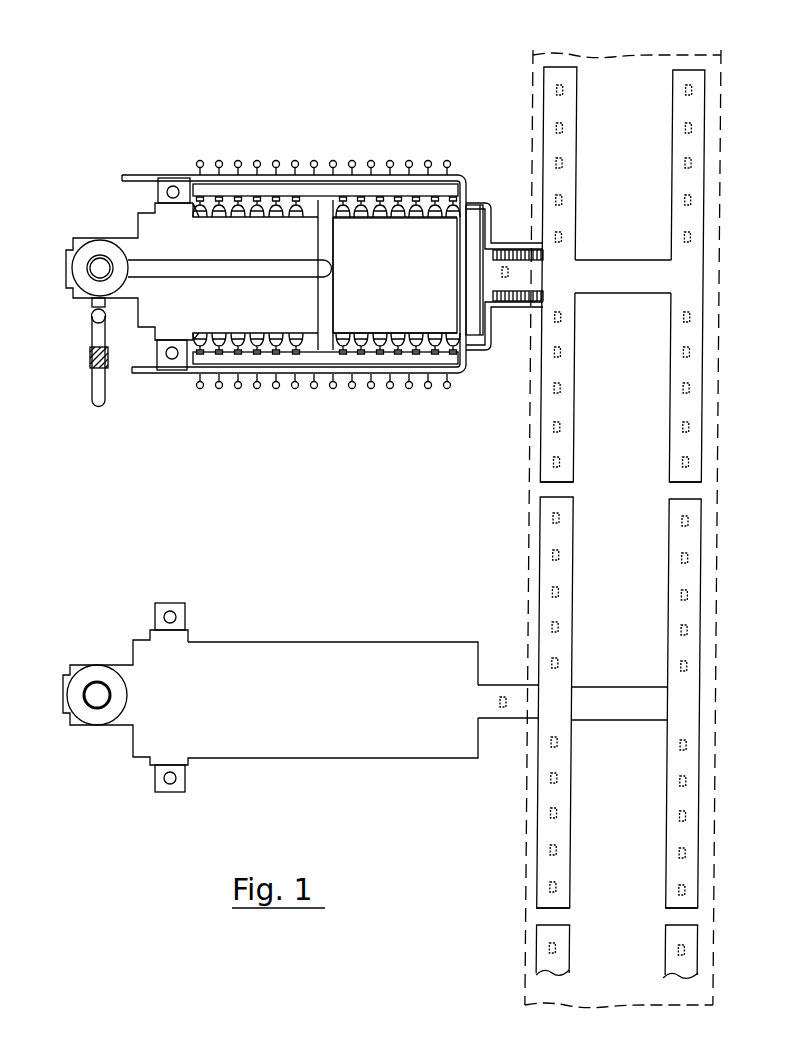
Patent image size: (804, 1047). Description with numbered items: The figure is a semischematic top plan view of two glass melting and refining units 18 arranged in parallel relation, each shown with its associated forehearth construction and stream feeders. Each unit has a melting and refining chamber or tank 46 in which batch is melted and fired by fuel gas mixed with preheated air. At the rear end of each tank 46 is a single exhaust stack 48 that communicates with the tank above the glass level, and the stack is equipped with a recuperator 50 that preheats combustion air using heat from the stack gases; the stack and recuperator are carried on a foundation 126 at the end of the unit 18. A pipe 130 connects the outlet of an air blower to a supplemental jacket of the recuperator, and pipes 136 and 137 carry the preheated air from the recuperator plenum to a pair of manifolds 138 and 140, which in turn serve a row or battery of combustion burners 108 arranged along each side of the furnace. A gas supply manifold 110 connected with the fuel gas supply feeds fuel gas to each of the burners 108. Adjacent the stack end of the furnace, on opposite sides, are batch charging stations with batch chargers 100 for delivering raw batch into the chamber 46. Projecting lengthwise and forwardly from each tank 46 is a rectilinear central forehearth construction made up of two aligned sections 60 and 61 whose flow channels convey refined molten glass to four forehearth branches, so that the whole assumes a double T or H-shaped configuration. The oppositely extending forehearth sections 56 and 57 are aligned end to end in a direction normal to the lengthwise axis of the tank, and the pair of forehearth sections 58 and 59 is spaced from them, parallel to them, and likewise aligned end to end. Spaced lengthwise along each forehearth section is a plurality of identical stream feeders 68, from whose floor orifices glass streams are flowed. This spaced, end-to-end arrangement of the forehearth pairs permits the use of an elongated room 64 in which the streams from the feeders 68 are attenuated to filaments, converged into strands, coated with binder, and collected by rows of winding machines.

The melting and refining unit 18 is at (360, 381).
The melting and refining chamber 46 is at (404, 279).
The exhaust stack 48 is at (90, 264).
The recuperator 50 is at (131, 242).
The forehearth section 56 is at (541, 464).
The forehearth section 57 is at (543, 70).
The forehearth section 58 is at (703, 472).
The forehearth section 59 is at (705, 100).
The central connecting forehearth section 60 is at (517, 268).
The central connecting forehearth section 61 is at (636, 261).
The elongated room 64 is at (718, 507).
The stream feeder 68 is at (545, 103).
The batch charger 100 is at (158, 190).
The combustion burner 108 is at (247, 195).
The gas supply manifold 110 is at (466, 190).
The foundation 126 is at (138, 300).
The pipe 130 is at (91, 378).
The pipe 136 is at (232, 260).
The pipe 137 is at (318, 241).
The manifold 138 is at (292, 366).
The manifold 140 is at (384, 192).